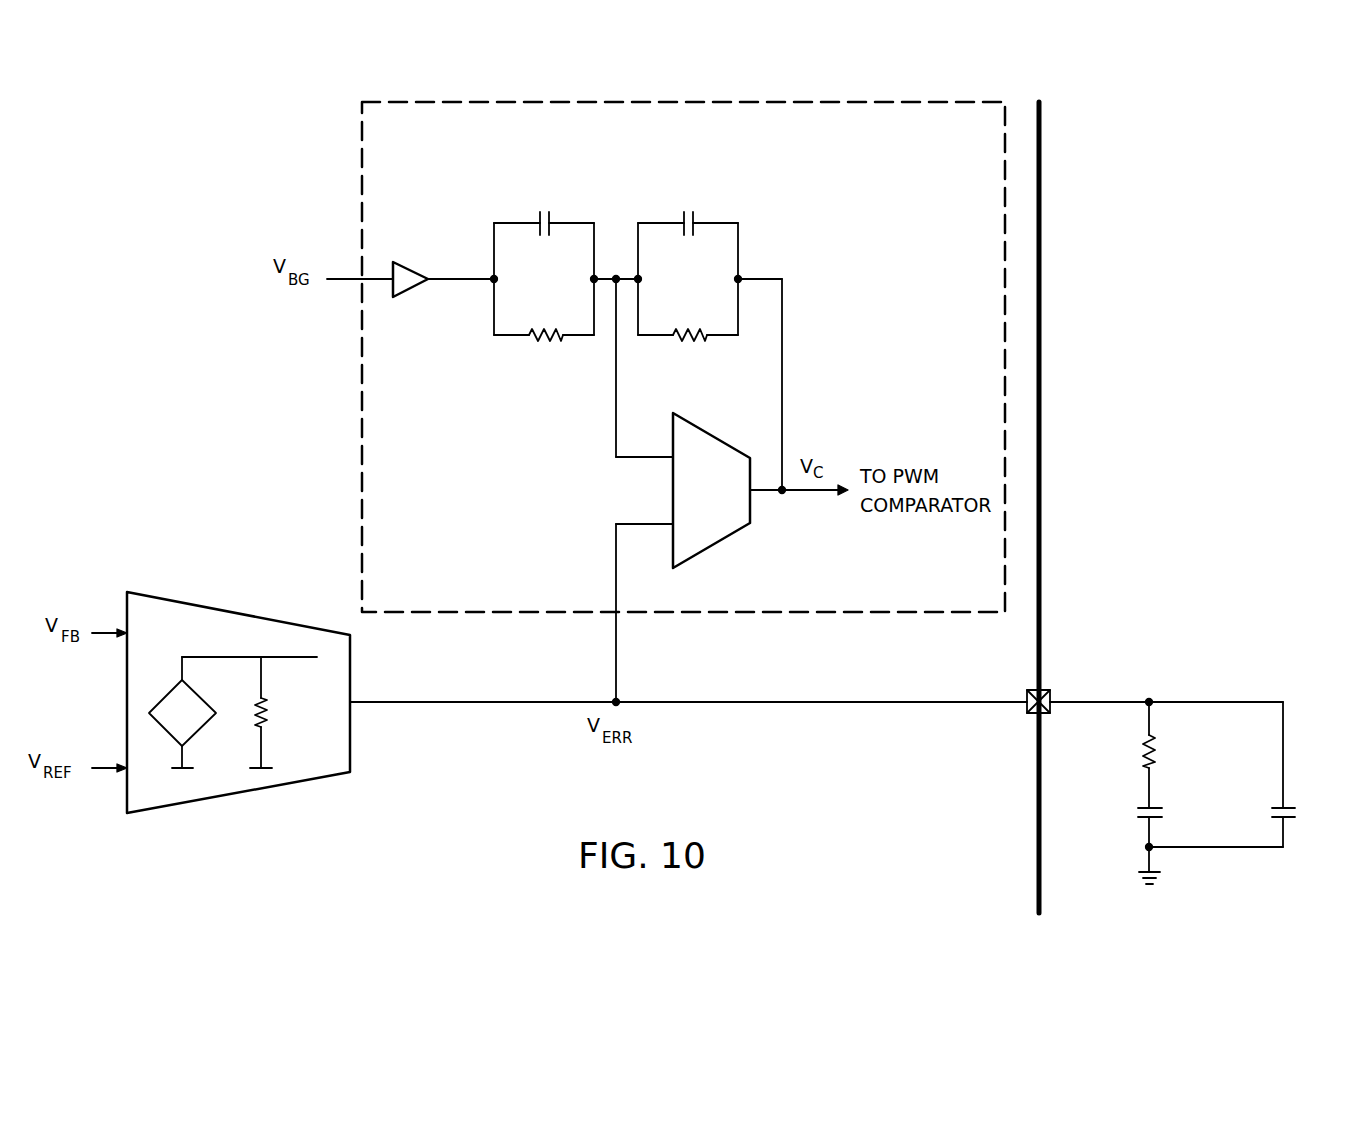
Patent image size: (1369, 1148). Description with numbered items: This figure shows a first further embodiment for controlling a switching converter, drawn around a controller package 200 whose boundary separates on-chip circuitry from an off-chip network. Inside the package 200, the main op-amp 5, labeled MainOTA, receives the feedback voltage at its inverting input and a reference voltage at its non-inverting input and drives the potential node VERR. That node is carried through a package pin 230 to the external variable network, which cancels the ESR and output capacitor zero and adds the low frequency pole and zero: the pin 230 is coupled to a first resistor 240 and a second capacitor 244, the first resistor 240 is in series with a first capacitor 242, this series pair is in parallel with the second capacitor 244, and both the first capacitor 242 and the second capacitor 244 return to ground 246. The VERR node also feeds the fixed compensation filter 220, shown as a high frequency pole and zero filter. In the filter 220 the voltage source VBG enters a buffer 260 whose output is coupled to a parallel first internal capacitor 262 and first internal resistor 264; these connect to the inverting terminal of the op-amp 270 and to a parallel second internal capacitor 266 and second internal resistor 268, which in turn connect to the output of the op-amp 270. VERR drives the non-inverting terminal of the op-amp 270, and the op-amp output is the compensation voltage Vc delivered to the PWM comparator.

The package 200 is at (1165, 377).
The fixed compensation filter 220 is at (357, 209).
The buffer 260 is at (415, 266).
The first internal capacitor 262 is at (544, 208).
The first internal resistor 264 is at (544, 347).
The second internal capacitor 266 is at (712, 208).
The second internal resistor 268 is at (712, 347).
The op-amp 270 is at (710, 548).
The op-amp 5 is at (238, 792).
The package pin 230 is at (1053, 697).
The first resistor 240 is at (1138, 752).
The first capacitor 242 is at (1138, 813).
The second capacitor 244 is at (1297, 817).
The ground 246 is at (1138, 882).